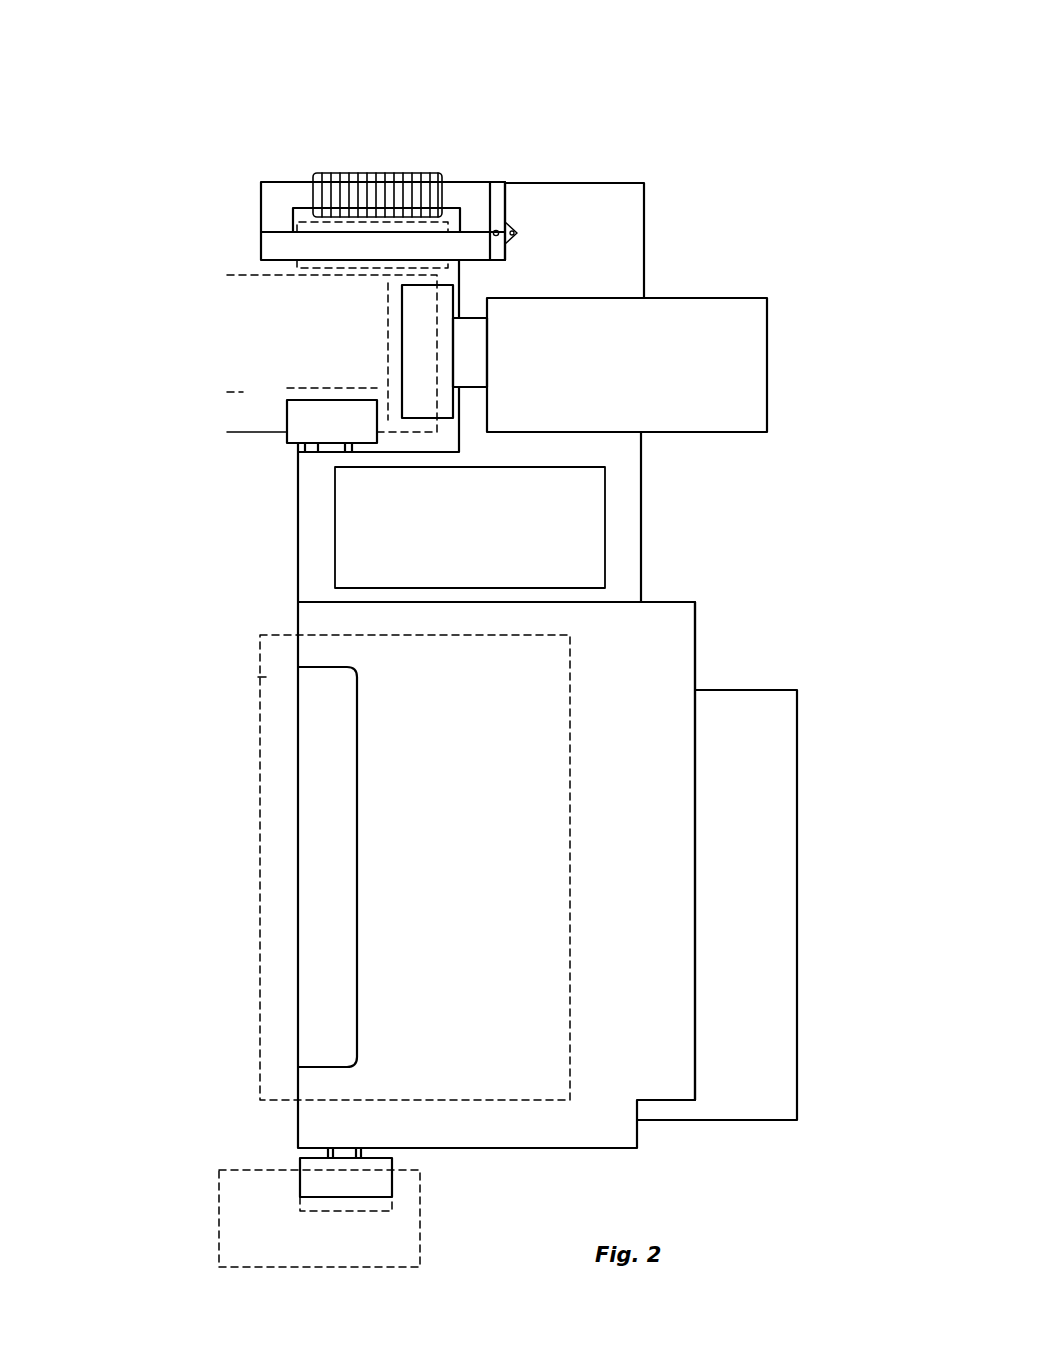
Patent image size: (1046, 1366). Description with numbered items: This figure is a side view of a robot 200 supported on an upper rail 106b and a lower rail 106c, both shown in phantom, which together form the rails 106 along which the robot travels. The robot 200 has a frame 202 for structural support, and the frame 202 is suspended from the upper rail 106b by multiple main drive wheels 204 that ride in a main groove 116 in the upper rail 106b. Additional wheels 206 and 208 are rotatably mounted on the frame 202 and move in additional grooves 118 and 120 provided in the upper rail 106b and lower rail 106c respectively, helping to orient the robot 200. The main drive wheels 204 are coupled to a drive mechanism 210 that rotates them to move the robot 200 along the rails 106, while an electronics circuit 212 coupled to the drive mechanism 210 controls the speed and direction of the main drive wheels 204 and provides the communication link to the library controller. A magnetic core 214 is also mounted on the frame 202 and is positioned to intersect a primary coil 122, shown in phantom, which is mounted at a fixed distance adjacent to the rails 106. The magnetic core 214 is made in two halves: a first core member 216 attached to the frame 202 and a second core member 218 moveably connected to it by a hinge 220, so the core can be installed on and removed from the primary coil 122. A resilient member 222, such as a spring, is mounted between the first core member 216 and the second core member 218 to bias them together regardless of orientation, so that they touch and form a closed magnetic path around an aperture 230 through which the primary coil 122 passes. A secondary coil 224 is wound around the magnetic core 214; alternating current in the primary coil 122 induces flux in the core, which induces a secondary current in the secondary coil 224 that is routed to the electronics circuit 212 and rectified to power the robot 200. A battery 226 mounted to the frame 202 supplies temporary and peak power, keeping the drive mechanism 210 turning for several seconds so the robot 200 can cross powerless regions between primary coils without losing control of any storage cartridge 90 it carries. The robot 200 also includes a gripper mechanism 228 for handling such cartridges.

The robot 200 is at (510, 76).
The frame 202 is at (627, 207).
The main drive wheels 204 is at (423, 330).
The additional wheel 206 is at (312, 437).
The additional wheel 208 is at (318, 1167).
The drive mechanism 210 is at (760, 362).
The electronics circuit 212 is at (790, 745).
The magnetic core 214 is at (306, 168).
The first core member 216 is at (258, 250).
The second core member 218 is at (278, 192).
The hinge 220 is at (497, 190).
The resilient member 222 is at (520, 233).
The secondary coil 224 is at (365, 175).
The battery 226 is at (303, 565).
The gripper mechanism 228 is at (683, 633).
The aperture 230 is at (303, 958).
The storage cartridge 90 is at (258, 677).
The rails 106 is at (247, 790).
The upper rail 106b is at (228, 393).
The lower rail 106c is at (212, 1200).
The main groove 116 is at (386, 302).
The additional groove 118 is at (356, 386).
The additional groove 120 is at (345, 1205).
The primary coil 122 is at (290, 265).